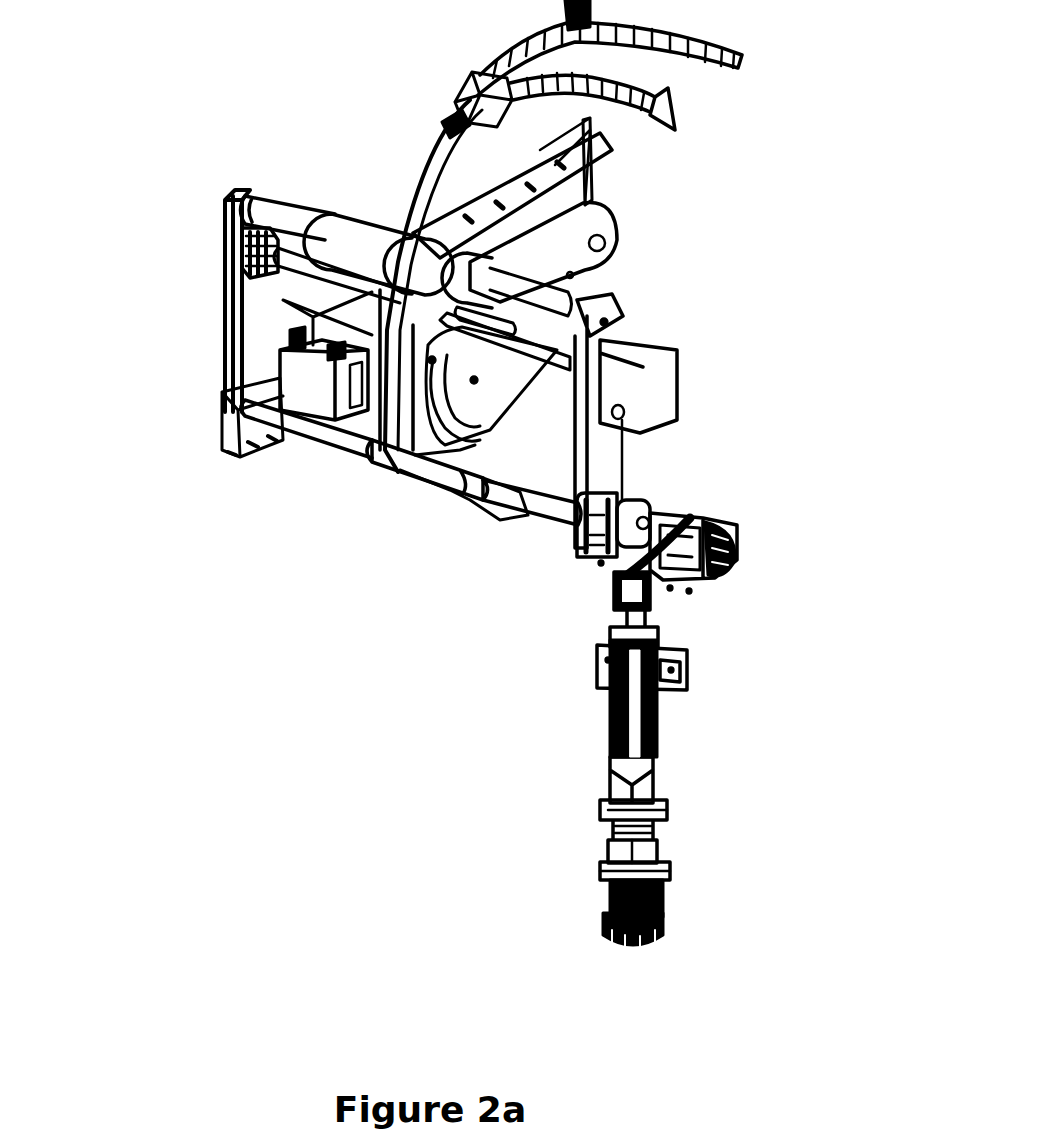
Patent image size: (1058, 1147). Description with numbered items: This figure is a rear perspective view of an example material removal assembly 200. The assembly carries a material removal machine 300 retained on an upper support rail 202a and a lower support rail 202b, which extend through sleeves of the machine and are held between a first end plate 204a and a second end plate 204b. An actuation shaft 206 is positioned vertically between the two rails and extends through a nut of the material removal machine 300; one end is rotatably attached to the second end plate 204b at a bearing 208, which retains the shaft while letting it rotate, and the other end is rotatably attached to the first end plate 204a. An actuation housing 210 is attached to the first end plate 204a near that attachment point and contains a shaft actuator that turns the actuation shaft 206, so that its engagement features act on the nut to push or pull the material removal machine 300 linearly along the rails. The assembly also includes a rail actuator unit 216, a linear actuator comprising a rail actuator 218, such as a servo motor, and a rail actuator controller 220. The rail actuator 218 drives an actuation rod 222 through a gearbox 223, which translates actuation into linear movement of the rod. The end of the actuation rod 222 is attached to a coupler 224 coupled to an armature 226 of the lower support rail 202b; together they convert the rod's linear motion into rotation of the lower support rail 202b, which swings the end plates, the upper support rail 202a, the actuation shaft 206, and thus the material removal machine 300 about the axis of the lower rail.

The material removal assembly 200 is at (125, 258).
The upper support rail 202a is at (292, 200).
The lower support rail 202b is at (520, 495).
The first end plate 204a is at (625, 320).
The second end plate 204b is at (238, 190).
The actuation shaft 206 is at (304, 250).
The bearing 208 is at (225, 255).
The actuation housing 210 is at (668, 376).
The rail actuator unit 216 is at (740, 728).
The rail actuator 218 is at (665, 915).
The rail actuator controller 220 is at (620, 942).
The actuation rod 222 is at (610, 724).
The gearbox 223 is at (620, 852).
The coupler 224 is at (608, 594).
The armature 226 is at (705, 517).
The material removal machine 300 is at (418, 135).